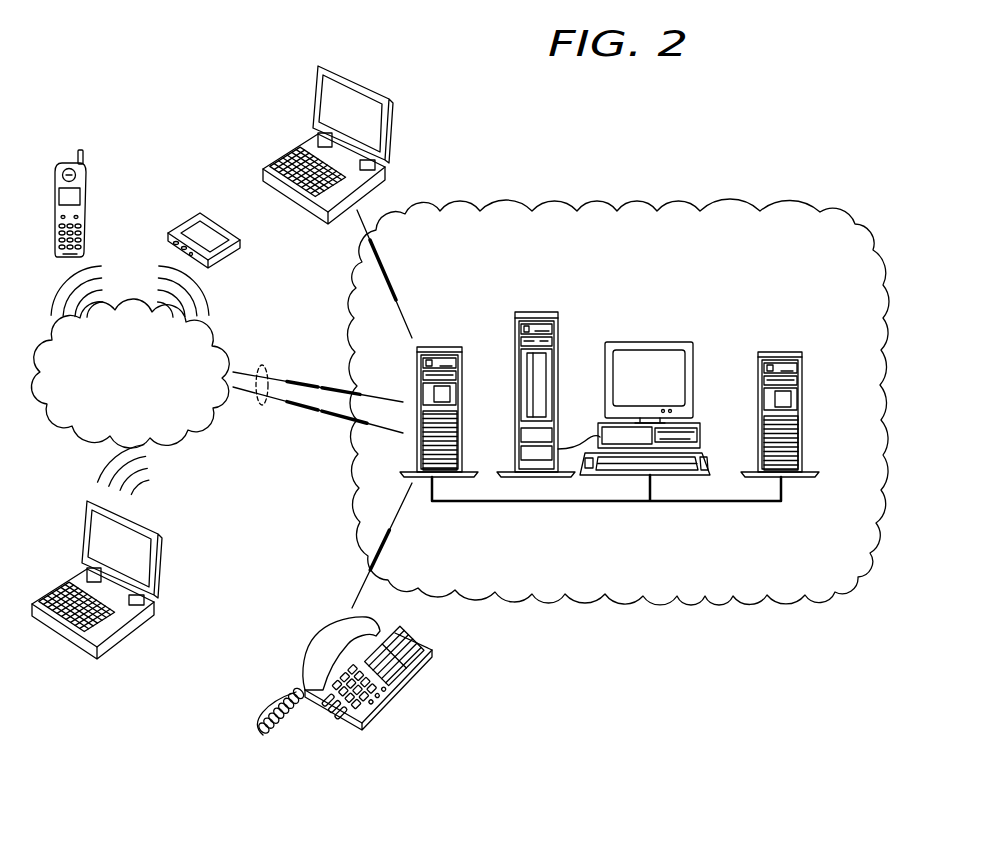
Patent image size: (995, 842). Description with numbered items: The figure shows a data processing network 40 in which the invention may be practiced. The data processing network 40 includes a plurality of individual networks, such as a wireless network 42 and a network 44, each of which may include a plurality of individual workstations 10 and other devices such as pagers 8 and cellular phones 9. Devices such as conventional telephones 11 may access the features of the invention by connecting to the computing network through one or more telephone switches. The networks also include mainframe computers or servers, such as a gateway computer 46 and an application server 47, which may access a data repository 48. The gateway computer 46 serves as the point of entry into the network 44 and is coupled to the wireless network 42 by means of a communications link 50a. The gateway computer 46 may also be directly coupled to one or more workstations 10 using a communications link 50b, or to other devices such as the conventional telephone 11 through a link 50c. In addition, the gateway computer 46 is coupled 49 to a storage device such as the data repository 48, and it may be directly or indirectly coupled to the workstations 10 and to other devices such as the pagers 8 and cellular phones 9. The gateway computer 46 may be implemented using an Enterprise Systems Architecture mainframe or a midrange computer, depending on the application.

The pager 8 is at (185, 224).
The cellular phone 9 is at (65, 165).
The workstation 10 is at (313, 97).
The conventional telephone 11 is at (432, 654).
The data processing network 40 is at (618, 429).
The wireless network 42 is at (205, 336).
The network 44 is at (623, 196).
The gateway computer 46 is at (447, 346).
The application server 47 is at (651, 341).
The data repository 48 is at (781, 351).
The coupling 49 is at (603, 504).
The communications link 50a is at (262, 407).
The communications link 50b is at (372, 265).
The link 50c is at (365, 584).